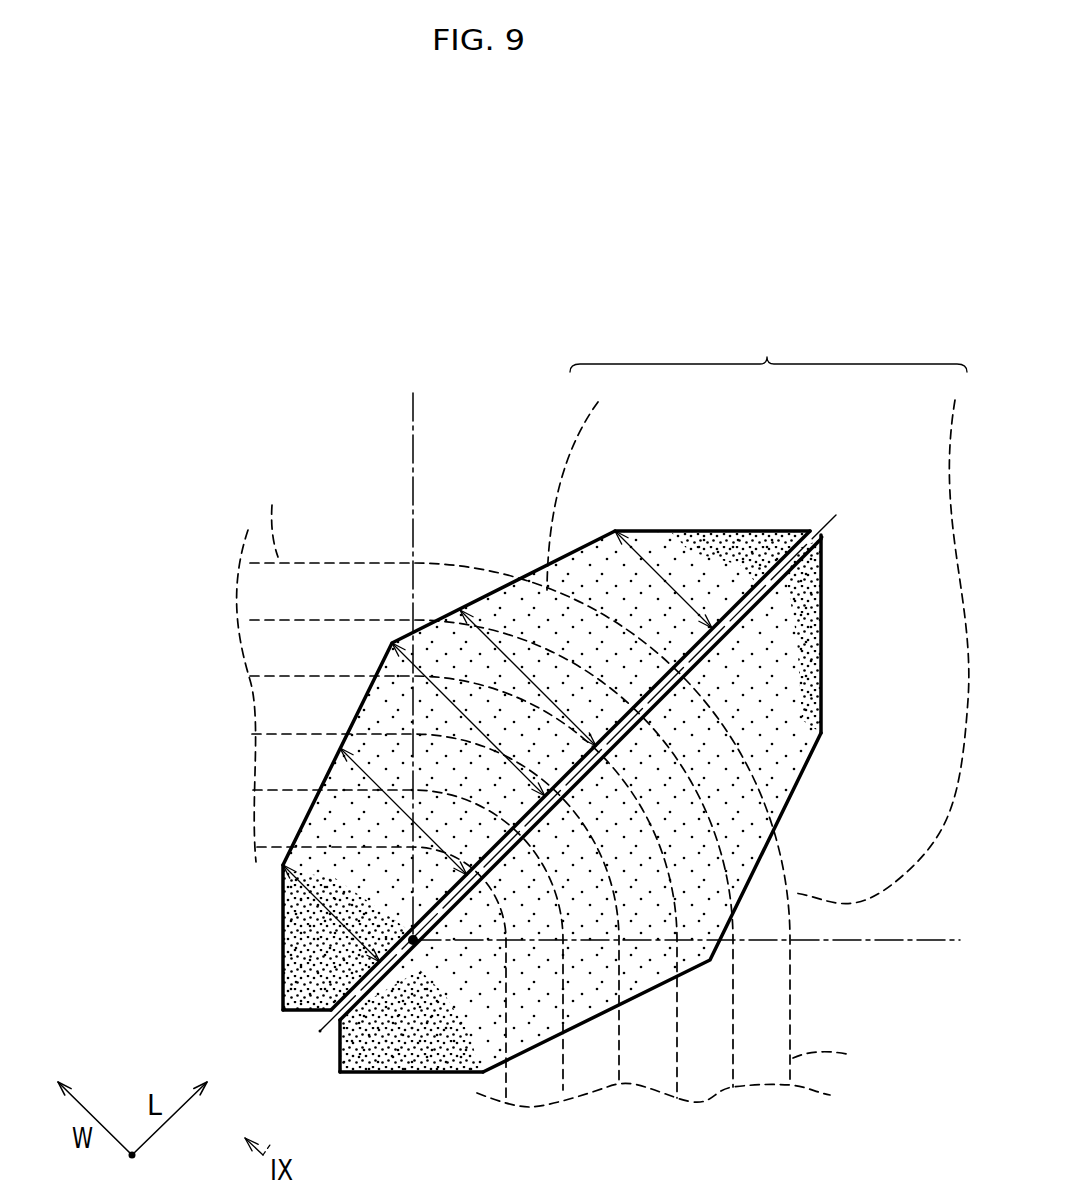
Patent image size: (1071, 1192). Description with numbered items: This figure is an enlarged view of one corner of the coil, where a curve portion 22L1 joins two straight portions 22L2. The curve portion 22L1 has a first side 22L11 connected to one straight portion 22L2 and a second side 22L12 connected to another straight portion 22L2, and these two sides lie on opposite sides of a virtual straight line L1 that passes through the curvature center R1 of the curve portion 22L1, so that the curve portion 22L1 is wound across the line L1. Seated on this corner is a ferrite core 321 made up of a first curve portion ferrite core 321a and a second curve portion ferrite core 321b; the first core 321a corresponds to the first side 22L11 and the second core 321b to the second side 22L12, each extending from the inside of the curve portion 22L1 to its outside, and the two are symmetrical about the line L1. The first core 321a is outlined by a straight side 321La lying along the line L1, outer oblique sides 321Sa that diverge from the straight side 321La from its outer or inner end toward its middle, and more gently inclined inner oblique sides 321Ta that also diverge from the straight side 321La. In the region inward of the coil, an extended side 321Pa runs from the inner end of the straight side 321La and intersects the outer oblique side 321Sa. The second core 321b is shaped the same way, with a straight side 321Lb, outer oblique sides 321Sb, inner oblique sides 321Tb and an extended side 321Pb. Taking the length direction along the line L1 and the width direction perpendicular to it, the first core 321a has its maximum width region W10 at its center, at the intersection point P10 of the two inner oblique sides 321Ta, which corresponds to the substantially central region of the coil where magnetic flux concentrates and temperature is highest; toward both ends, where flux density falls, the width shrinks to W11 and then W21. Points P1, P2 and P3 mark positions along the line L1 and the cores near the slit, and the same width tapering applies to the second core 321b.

The curve portion 22L1 is at (768, 348).
The first side 22L11 is at (596, 478).
The second side 22L12 is at (882, 635).
The straight portion 22L2 is at (571, 791).
The ferrite core 321 is at (571, 805).
The first curve portion ferrite core 321a is at (542, 734).
The second curve portion ferrite core 321b is at (616, 851).
The inner oblique side 321Ta is at (360, 703).
The inner oblique side 321Tb is at (793, 793).
The outer oblique side 321Sa is at (712, 530).
The outer oblique side 321Sb is at (823, 650).
The straight side 321La is at (752, 590).
The straight side 321Lb is at (766, 598).
The extended side 321Pa is at (300, 1011).
The extended side 321Pb is at (338, 1053).
The virtual straight line L1 is at (835, 518).
The maximum width region W10 is at (453, 700).
The width W11 is at (527, 678).
The width W21 is at (665, 580).
The point P1 is at (825, 537).
The point P2 is at (322, 1030).
The point P3 is at (340, 1071).
The intersection point P10 is at (392, 643).
The curvature center R1 is at (415, 944).